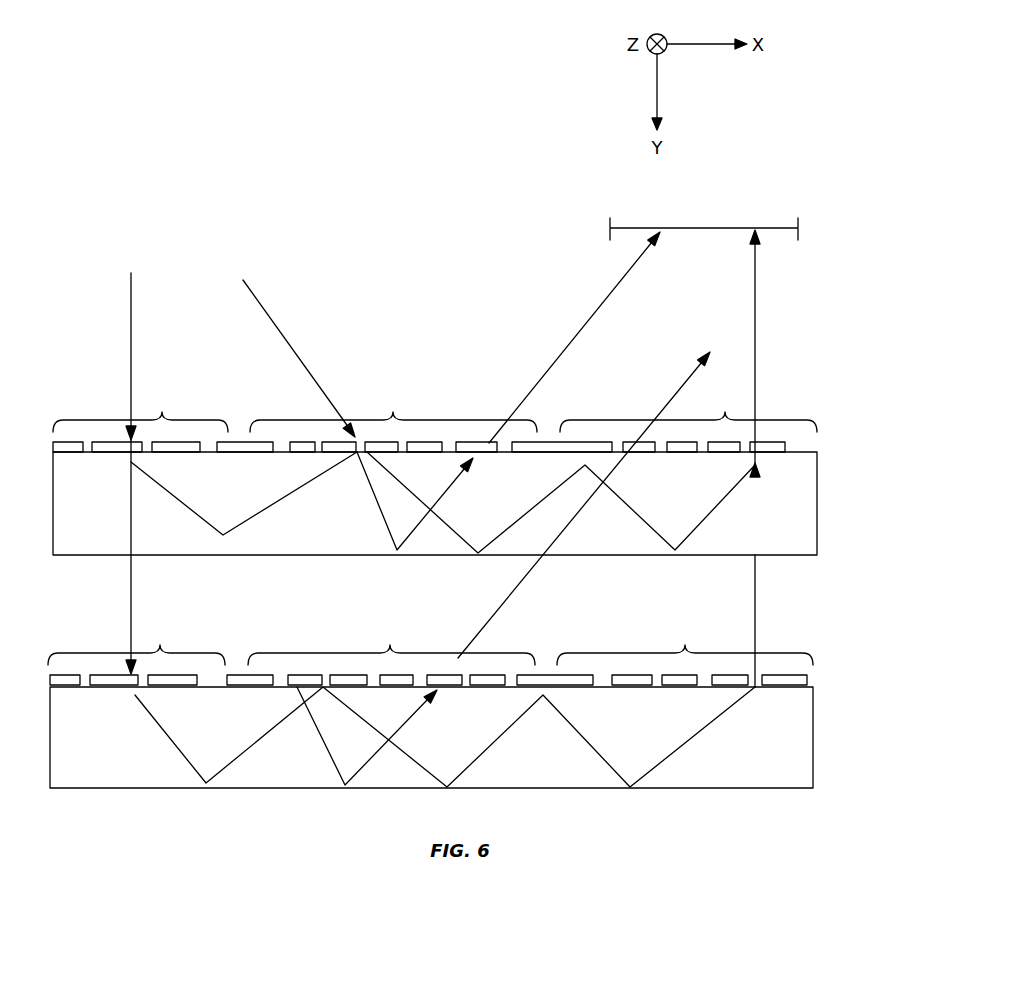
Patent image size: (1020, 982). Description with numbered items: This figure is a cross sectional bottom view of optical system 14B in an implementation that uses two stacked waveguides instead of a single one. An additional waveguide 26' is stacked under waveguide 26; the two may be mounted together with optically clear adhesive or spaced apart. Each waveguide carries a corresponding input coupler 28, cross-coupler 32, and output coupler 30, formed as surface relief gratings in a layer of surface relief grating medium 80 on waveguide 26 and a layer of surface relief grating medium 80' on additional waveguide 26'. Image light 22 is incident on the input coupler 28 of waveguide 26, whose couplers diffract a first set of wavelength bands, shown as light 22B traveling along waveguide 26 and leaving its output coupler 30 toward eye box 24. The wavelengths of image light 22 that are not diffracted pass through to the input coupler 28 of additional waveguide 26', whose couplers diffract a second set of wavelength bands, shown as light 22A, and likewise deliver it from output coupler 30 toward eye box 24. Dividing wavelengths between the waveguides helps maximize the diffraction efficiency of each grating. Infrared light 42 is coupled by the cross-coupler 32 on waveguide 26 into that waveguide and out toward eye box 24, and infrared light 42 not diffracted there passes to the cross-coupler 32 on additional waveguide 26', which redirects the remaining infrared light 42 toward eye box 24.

The optical system 14B is at (244, 183).
The image light 22 is at (133, 312).
The first light component 22A is at (130, 583).
The second light component 22B is at (177, 493).
The eye box 24 is at (752, 225).
The waveguide 26 is at (463, 503).
The additional waveguide 26' is at (463, 737).
The input coupler 28 is at (138, 525).
The output coupler 30 is at (687, 525).
The cross-coupler 32 is at (392, 525).
The infrared light 42 is at (267, 312).
The first metasurface grating layer 80 is at (463, 434).
The surface relief grating medium 80' is at (465, 670).